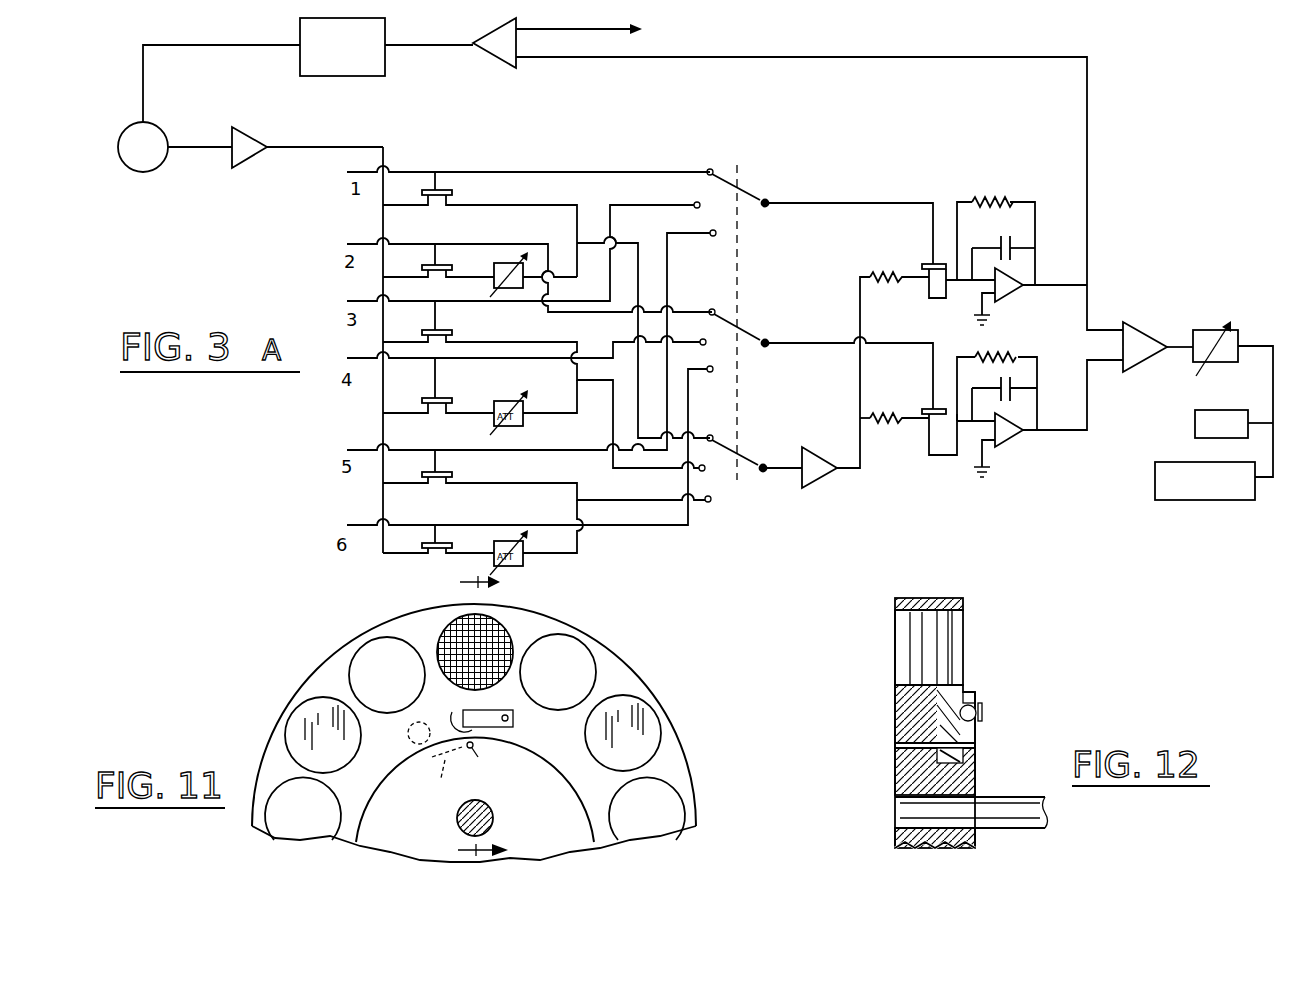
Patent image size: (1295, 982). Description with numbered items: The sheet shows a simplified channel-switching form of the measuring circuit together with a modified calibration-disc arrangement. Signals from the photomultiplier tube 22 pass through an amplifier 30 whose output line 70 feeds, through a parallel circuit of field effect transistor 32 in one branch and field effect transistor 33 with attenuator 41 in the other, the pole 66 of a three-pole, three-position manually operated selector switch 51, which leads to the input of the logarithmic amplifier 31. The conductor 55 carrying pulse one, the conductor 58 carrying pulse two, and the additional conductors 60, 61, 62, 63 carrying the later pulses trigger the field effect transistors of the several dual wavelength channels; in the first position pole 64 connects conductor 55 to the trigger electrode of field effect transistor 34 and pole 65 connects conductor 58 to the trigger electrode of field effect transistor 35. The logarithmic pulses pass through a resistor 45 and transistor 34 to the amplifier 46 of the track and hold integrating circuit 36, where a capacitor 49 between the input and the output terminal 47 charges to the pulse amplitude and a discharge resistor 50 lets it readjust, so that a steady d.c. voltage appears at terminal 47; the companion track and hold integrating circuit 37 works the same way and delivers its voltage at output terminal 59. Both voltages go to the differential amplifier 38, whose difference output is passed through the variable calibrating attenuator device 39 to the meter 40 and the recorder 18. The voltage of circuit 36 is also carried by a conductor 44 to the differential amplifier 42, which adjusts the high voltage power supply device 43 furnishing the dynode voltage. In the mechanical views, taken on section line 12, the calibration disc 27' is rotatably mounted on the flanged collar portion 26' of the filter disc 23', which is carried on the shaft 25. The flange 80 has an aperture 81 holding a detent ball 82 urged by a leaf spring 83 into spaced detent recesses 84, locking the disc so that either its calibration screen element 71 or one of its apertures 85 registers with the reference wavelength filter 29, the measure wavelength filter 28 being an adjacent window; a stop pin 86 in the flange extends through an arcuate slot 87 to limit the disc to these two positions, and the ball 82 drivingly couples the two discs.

In FIG. 3A, the photomultiplier tube 22 is at (143, 172).
In FIG. 3A, the amplifier 30 is at (240, 168).
In FIG. 3A, the output line 70 is at (312, 150).
In FIG. 3A, the high voltage power supply device 43 is at (362, 76).
In FIG. 3A, the differential amplifier 42 is at (485, 33).
In FIG. 3A, the conductor 44 is at (852, 57).
In FIG. 3A, the conductor 55 is at (400, 172).
In FIG. 3A, the conductor 58 is at (396, 244).
In FIG. 3A, the conductor 60 is at (396, 301).
In FIG. 3A, the conductor 61 is at (392, 358).
In FIG. 3A, the conductor 62 is at (396, 450).
In FIG. 3A, the conductor 63 is at (396, 525).
In FIG. 3A, the field effect transistor 32 is at (452, 192).
In FIG. 3A, the field effect transistor 33 is at (462, 260).
In FIG. 3A, the attenuator 41 is at (536, 258).
In FIG. 3A, the pole 64 is at (742, 170).
In FIG. 3A, the pole 65 is at (742, 320).
In FIG. 3A, the pole 66 is at (742, 445).
In FIG. 3A, the selector switch 51 is at (740, 270).
In FIG. 3A, the logarithmic amplifier 31 is at (812, 490).
In FIG. 3A, the resistor 45 is at (888, 283).
In FIG. 3A, the field effect transistor 34 is at (924, 264).
In FIG. 3A, the amplifier 46 is at (1010, 300).
In FIG. 3A, the track and hold integrating circuit 36 is at (1022, 232).
In FIG. 3A, the discharge resistor 50 is at (995, 198).
In FIG. 3A, the capacitor 49 is at (999, 245).
In FIG. 3A, the output terminal 47 is at (1058, 285).
In FIG. 3A, the field effect transistor 35 is at (924, 409).
In FIG. 3A, the output terminal 59 is at (1050, 430).
In FIG. 3A, the track and hold integrating circuit 37 is at (1024, 400).
In FIG. 3A, the differential amplifier 38 is at (1140, 365).
In FIG. 3A, the variable calibrating attenuator device 39 is at (1232, 325).
In FIG. 3A, the meter 40 is at (1195, 423).
In FIG. 3A, the recorder 18 is at (1155, 488).
In FIG. 3A, the section line 12 is at (465, 584).
In FIG. 11, the section line 12 is at (469, 851).
In FIG. 11, the calibration disc 27' is at (474, 733).
In FIG. 12, the calibration disc 27' is at (959, 706).
In FIG. 11, the calibration screen element 71 is at (500, 630).
In FIG. 12, the calibration screen element 71 is at (950, 645).
In FIG. 11, the aperture 85 is at (358, 673).
In FIG. 11, the measure wavelength filter 28 is at (648, 728).
In FIG. 11, the shaft 25 is at (493, 816).
In FIG. 12, the shaft 25 is at (993, 828).
In FIG. 11, the aperture 81 is at (475, 721).
In FIG. 11, the leaf spring 83 is at (513, 724).
In FIG. 12, the leaf spring 83 is at (985, 711).
In FIG. 11, the detent recess 84 is at (410, 742).
In FIG. 12, the detent recess 84 is at (955, 697).
In FIG. 11, the stop pin 86 is at (484, 761).
In FIG. 12, the stop pin 86 is at (905, 745).
In FIG. 11, the arcuate slot 87 is at (443, 776).
In FIG. 12, the arcuate slot 87 is at (940, 722).
In FIG. 12, the reference wavelength filter 29 is at (912, 645).
In FIG. 12, the detent ball 82 is at (975, 707).
In FIG. 12, the filter disc 23' is at (910, 715).
In FIG. 12, the flange 80 is at (970, 735).
In FIG. 12, the flanged collar portion 26' is at (960, 771).